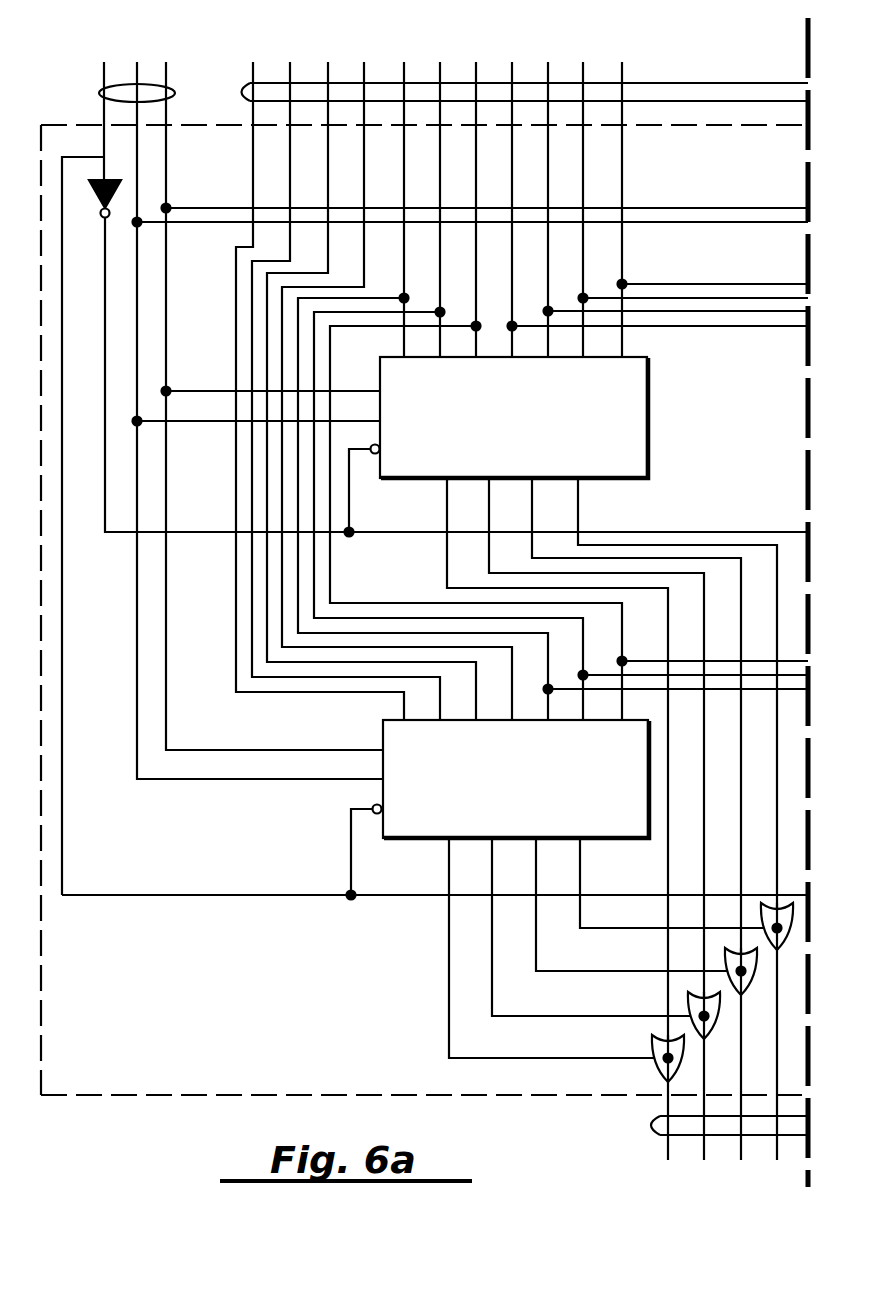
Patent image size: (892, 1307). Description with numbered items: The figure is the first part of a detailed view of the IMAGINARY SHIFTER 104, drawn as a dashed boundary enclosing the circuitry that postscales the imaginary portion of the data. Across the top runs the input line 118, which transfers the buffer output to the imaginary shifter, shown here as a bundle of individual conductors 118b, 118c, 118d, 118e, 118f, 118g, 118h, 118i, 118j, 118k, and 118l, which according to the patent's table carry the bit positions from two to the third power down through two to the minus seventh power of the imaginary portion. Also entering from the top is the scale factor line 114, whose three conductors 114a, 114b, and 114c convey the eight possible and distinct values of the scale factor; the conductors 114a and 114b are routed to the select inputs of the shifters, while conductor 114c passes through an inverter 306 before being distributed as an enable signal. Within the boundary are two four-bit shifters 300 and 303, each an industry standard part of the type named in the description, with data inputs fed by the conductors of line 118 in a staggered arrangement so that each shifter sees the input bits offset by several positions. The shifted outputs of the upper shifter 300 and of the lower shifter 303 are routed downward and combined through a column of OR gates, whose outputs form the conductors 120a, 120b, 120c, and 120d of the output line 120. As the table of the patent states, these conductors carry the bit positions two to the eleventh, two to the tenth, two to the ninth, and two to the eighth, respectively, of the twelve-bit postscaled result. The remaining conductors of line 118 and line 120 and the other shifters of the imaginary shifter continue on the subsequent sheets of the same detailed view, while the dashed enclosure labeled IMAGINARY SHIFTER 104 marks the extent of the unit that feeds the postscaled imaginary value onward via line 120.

The imaginary shifter 104 is at (127, 1098).
The scale factor line 114 is at (100, 93).
The scale factor conductor 114a is at (165, 64).
The scale factor conductor 114b is at (135, 62).
The scale factor conductor 114c is at (103, 64).
The input line 118 is at (712, 83).
The conductor of line 118 118b is at (253, 64).
The conductor of line 118 118c is at (288, 62).
The conductor of line 118 118d is at (327, 64).
The conductor of line 118 118e is at (362, 62).
The conductor of line 118 118f is at (403, 64).
The conductor of line 118 118g is at (438, 62).
The conductor of line 118 118h is at (475, 64).
The conductor of line 118 118i is at (510, 62).
The conductor of line 118 118j is at (547, 64).
The conductor of line 118 118k is at (581, 62).
The conductor of line 118 118l is at (621, 64).
The 4-bit shifter 300 is at (648, 398).
The 4-bit shifter 303 is at (432, 841).
The inverter 306 is at (98, 214).
The output line 120 is at (651, 1126).
The conductor of line 120 120a is at (470, 1058).
The conductor of line 120 120b is at (514, 1016).
The conductor of line 120 120c is at (558, 971).
The conductor of line 120 120d is at (596, 928).